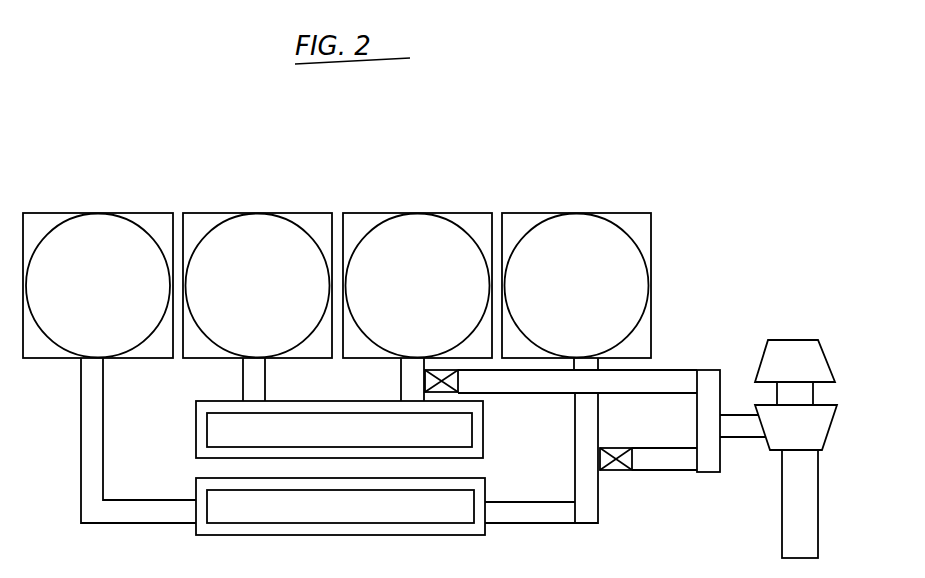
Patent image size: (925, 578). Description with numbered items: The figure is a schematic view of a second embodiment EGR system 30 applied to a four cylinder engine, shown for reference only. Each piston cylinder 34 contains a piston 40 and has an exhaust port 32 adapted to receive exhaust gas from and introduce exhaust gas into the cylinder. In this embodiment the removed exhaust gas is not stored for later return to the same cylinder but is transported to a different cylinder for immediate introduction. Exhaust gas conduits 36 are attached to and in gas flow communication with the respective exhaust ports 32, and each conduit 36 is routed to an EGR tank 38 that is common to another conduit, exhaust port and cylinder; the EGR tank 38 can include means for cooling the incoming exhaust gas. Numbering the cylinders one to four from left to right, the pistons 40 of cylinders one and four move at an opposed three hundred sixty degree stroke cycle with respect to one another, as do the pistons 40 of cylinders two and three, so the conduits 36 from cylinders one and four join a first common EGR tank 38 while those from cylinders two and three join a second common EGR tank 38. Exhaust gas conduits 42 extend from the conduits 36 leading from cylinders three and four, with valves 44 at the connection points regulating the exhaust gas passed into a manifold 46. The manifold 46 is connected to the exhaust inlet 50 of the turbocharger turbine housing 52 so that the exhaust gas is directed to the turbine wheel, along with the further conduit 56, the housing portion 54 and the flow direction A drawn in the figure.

The EGR system 30 is at (510, 168).
The exhaust port 32 is at (93, 356).
The piston cylinder 34 is at (48, 231).
The exhaust gas conduit 36 is at (103, 380).
The EGR tank 38 is at (412, 440).
The piston 40 is at (122, 285).
The exhaust gas conduit 42 is at (672, 375).
The valve 44 is at (455, 392).
The manifold 46 is at (718, 385).
The exhaust inlet 50 is at (760, 432).
The turbine housing 52 is at (823, 430).
The nozzle housing 54 is at (780, 354).
The return conduit 56 is at (598, 430).
The flow direction A is at (841, 397).